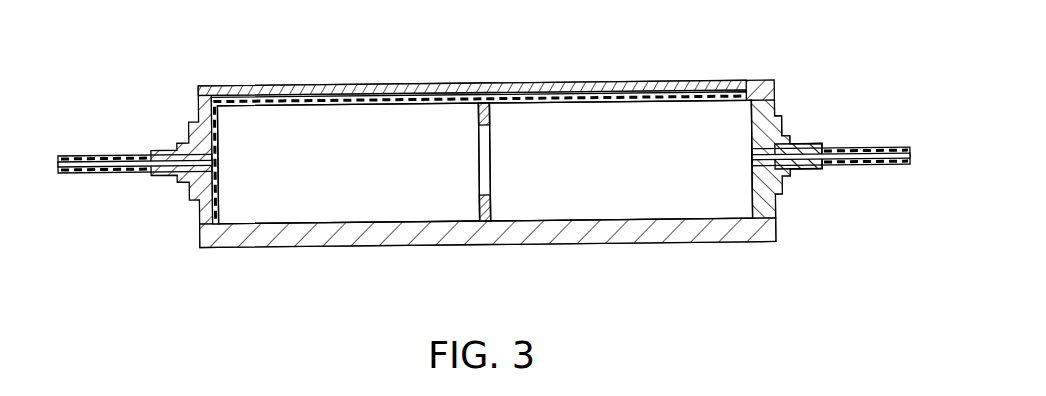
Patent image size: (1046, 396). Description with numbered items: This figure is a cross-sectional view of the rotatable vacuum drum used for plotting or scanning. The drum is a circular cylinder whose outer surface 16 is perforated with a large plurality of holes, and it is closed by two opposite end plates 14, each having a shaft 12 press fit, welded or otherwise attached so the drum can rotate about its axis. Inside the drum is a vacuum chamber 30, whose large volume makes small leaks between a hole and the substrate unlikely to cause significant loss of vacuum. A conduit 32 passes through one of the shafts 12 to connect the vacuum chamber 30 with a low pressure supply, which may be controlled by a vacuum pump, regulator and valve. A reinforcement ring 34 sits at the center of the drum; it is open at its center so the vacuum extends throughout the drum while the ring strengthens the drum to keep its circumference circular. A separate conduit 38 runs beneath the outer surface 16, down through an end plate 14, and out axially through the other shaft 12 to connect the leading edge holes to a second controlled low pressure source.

The shaft 12 is at (153, 146).
The end plate 14 is at (197, 217).
The outer surface 16 is at (335, 244).
The vacuum chamber 30 is at (380, 141).
The conduit 32 is at (780, 179).
The reinforcement ring 34 is at (491, 114).
The conduit 38 is at (158, 174).